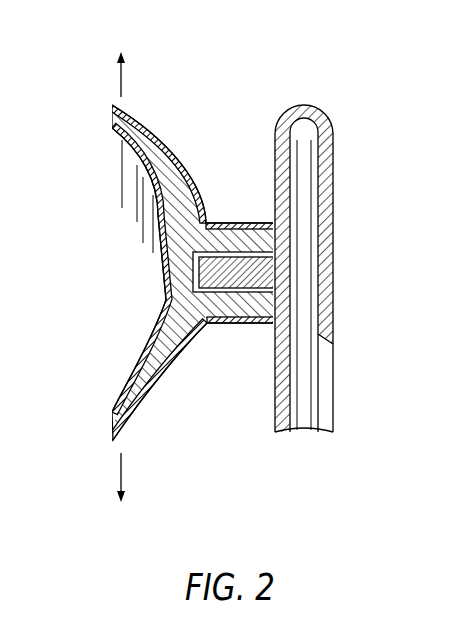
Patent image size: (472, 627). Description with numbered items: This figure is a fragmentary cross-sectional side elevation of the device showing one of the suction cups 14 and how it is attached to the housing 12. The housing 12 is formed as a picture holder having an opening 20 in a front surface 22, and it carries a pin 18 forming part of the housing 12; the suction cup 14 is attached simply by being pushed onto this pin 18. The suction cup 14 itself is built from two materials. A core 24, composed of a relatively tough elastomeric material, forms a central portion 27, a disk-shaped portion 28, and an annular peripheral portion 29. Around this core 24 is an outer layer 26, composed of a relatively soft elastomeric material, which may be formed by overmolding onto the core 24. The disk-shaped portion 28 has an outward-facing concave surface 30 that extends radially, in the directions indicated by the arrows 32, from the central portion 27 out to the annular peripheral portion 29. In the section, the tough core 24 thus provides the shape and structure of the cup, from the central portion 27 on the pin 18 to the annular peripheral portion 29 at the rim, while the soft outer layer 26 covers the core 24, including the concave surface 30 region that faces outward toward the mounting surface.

The housing 12 is at (340, 160).
The suction cup 14 is at (166, 138).
The pin 18 is at (247, 323).
The opening 20 is at (328, 340).
The front surface 22 is at (333, 237).
The core 24 is at (195, 345).
The outer layer 26 is at (176, 163).
The central portion 27 is at (213, 223).
The disk-shaped portion 28 is at (148, 188).
The annular peripheral portion 29 is at (131, 128).
The outward-facing concave surface 30 is at (150, 353).
The arrows 32 is at (122, 73).